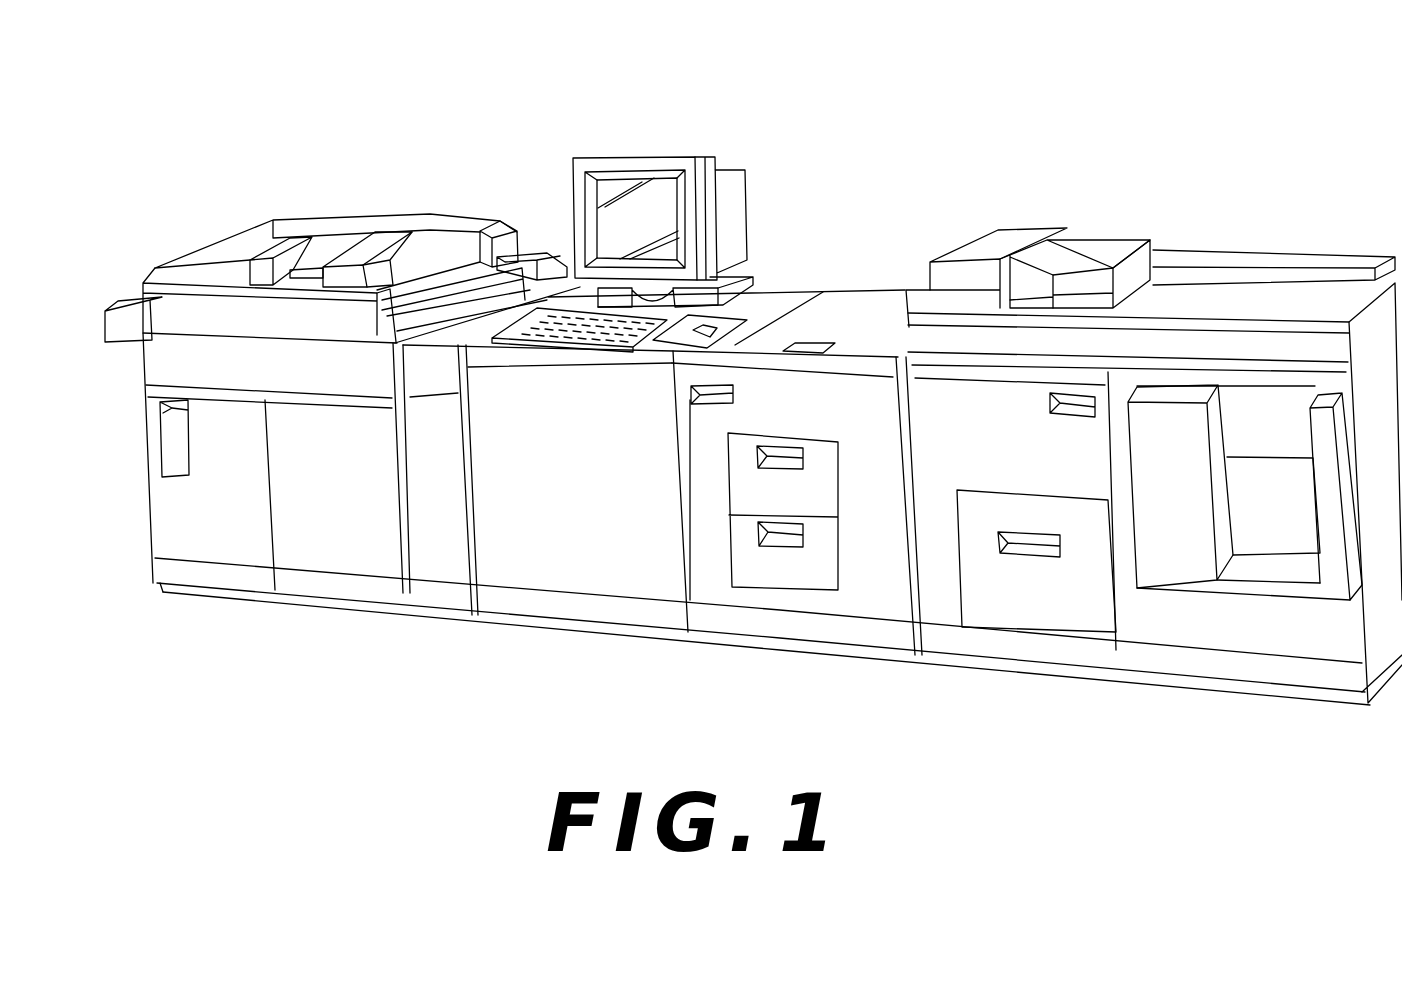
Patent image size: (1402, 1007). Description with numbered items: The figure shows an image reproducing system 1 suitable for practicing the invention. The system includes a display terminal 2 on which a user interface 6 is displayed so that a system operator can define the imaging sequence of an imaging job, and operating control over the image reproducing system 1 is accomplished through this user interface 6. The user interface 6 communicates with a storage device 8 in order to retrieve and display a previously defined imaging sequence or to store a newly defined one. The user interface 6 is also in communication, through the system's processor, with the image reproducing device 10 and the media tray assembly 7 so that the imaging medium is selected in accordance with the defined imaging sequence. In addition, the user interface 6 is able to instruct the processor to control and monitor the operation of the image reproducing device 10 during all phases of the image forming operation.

The image reproducing system 1 is at (753, 364).
The display terminal 2 is at (622, 225).
The user interface 6 is at (622, 213).
The media tray assembly 7 is at (1252, 502).
The storage device 8 is at (850, 519).
The image reproducing device 10 is at (1085, 242).